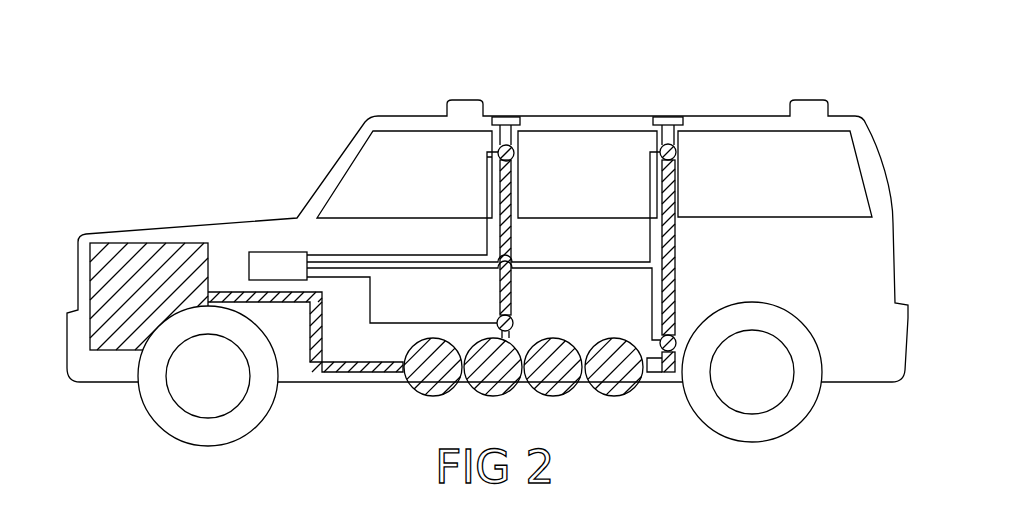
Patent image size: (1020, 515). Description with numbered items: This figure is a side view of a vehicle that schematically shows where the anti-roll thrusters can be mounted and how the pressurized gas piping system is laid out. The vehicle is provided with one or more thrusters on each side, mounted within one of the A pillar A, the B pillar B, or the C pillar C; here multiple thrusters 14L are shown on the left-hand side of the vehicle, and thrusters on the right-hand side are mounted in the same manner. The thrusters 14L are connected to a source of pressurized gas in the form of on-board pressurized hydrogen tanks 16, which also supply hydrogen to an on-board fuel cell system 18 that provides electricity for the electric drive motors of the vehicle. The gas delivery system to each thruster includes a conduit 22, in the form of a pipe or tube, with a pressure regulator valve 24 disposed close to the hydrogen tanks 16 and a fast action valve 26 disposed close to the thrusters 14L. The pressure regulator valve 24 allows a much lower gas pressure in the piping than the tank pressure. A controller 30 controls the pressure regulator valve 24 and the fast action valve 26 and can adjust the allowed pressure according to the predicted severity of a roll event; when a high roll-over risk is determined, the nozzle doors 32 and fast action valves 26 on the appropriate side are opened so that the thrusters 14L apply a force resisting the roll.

The fuel cell system 18 is at (140, 243).
The controller 30 is at (268, 251).
The A pillar A is at (340, 167).
The B pillar B is at (520, 140).
The C pillar C is at (680, 138).
The nozzle doors 32 is at (503, 117).
The thrusters 14L is at (505, 140).
The fast action valve 26 is at (497, 154).
The conduit 22 is at (672, 250).
The pressure regulator valve 24 is at (497, 320).
The hydrogen tank 16 is at (650, 402).